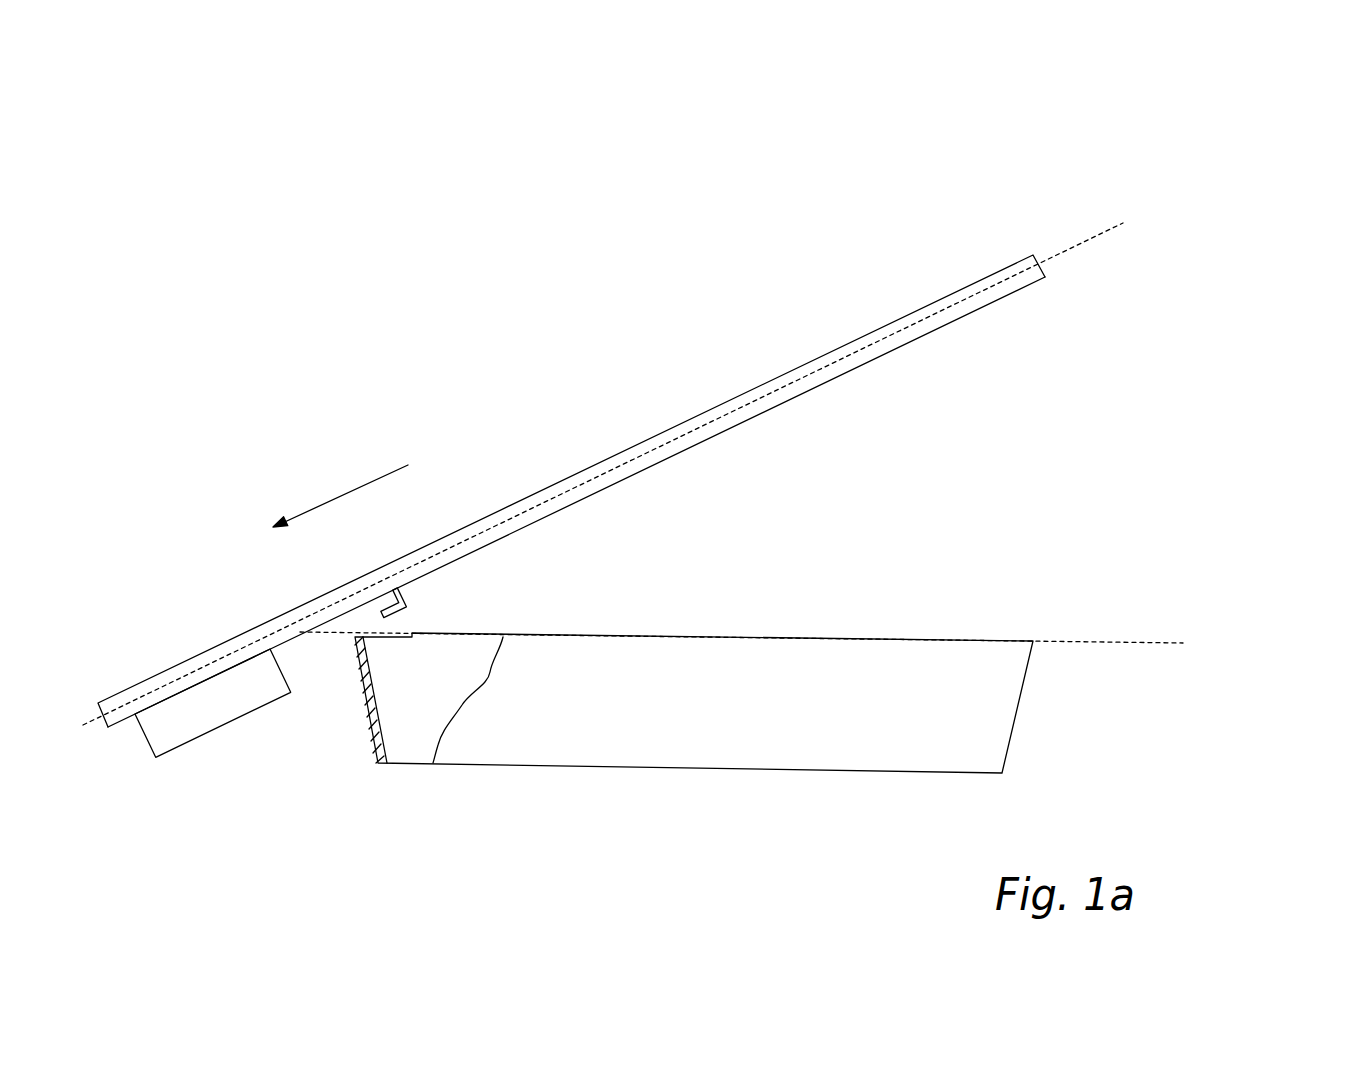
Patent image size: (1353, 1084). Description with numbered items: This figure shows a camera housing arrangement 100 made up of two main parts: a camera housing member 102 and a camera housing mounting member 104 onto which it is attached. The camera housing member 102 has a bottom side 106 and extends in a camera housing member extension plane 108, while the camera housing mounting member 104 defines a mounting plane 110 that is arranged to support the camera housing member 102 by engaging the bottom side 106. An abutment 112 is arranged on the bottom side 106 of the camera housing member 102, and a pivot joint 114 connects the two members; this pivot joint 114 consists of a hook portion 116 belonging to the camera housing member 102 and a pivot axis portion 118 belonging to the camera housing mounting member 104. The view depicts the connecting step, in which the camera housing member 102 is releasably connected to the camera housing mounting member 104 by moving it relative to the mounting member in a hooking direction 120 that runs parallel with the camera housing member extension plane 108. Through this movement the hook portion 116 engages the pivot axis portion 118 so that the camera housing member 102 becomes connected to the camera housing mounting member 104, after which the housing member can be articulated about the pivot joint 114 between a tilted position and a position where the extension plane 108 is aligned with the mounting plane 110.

The camera housing arrangement 100 is at (1163, 344).
The camera housing member 102 is at (945, 310).
The camera housing mounting member 104 is at (978, 745).
The bottom side 106 is at (800, 397).
The camera housing member extension plane 108 is at (1085, 240).
The mounting plane 110 is at (1125, 641).
The abutment 112 is at (173, 715).
The pivot joint 114 is at (430, 617).
The hook portion 116 is at (405, 600).
The pivot axis portion 118 is at (399, 648).
The hooking direction 120 is at (348, 490).